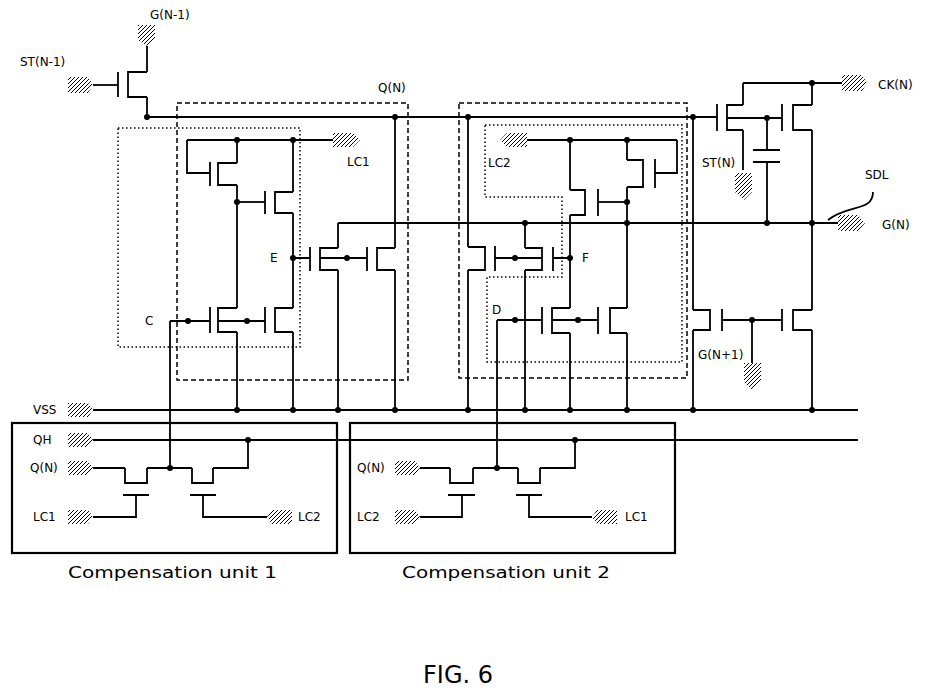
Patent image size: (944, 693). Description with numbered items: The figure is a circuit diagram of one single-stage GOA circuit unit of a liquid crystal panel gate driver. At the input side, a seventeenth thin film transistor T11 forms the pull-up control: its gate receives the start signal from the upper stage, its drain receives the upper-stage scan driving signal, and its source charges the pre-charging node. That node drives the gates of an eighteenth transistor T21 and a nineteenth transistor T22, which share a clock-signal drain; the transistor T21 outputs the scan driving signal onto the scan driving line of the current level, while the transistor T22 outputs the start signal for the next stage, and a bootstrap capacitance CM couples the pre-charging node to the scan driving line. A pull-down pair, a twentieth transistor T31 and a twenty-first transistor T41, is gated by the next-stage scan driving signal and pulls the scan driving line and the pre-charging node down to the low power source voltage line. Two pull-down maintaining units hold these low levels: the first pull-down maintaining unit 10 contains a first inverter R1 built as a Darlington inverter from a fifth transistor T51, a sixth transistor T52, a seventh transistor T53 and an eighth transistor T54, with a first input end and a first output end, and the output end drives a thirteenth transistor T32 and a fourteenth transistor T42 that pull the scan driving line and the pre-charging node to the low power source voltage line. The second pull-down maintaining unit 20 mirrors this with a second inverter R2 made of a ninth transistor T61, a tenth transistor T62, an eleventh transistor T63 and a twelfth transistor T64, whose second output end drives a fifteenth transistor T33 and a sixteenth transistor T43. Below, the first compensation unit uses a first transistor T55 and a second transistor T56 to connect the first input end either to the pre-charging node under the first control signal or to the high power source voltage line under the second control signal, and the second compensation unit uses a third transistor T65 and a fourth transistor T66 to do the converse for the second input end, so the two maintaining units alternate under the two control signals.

The first pull-down maintaining unit 10 is at (218, 103).
The second pull-down maintaining unit 20 is at (510, 103).
The first inverter R1 is at (277, 128).
The second inverter R2 is at (602, 125).
The seventeenth thin film transistor T11 is at (149, 84).
The fifth transistor T51 is at (220, 185).
The sixth transistor T52 is at (220, 312).
The seventh transistor T53 is at (277, 194).
The eighth transistor T54 is at (273, 312).
The first transistor T55 is at (121, 508).
The second transistor T56 is at (228, 508).
The thirteenth transistor T32 is at (321, 249).
The fourteenth transistor T42 is at (373, 249).
The sixteenth transistor T43 is at (487, 249).
The fifteenth transistor T33 is at (541, 249).
The ninth transistor T61 is at (644, 184).
The tenth transistor T62 is at (609, 312).
The eleventh transistor T63 is at (588, 193).
The twelfth transistor T64 is at (554, 312).
The third transistor T65 is at (447, 508).
The fourth transistor T66 is at (554, 508).
The nineteenth transistor T22 is at (726, 108).
The eighteenth transistor T21 is at (812, 117).
The twenty-first transistor T41 is at (709, 308).
The twentieth transistor T31 is at (796, 308).
The bootstrap capacitance CM is at (773, 166).